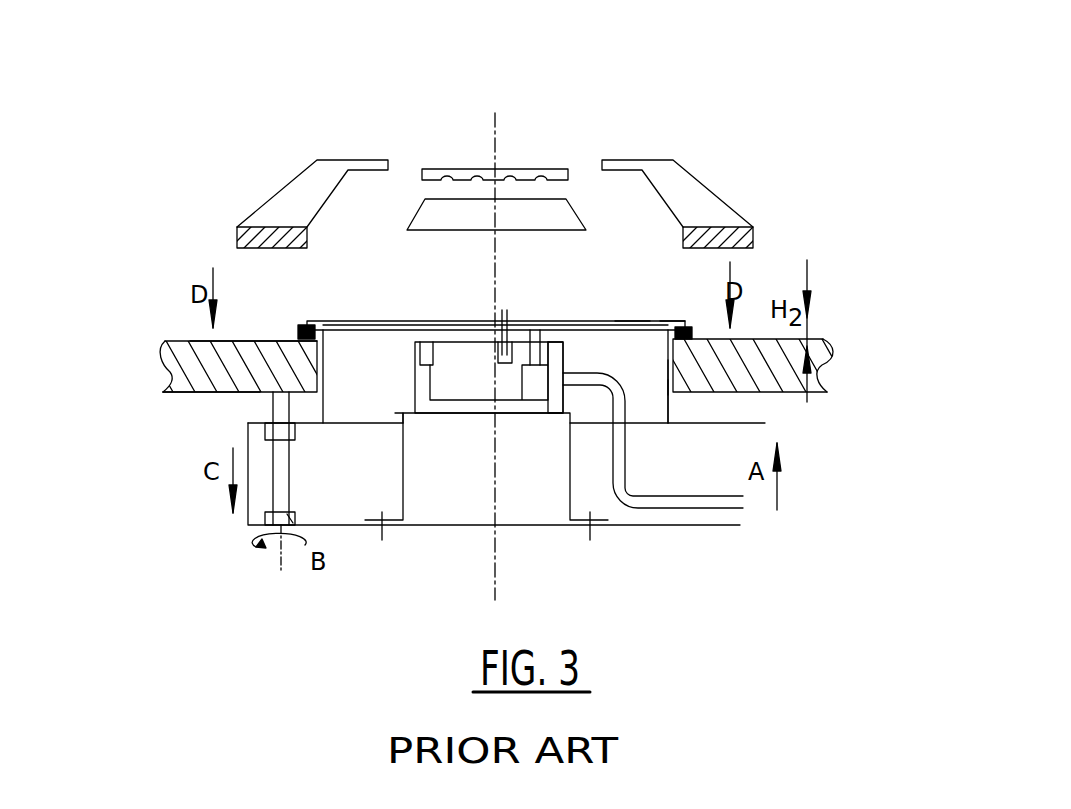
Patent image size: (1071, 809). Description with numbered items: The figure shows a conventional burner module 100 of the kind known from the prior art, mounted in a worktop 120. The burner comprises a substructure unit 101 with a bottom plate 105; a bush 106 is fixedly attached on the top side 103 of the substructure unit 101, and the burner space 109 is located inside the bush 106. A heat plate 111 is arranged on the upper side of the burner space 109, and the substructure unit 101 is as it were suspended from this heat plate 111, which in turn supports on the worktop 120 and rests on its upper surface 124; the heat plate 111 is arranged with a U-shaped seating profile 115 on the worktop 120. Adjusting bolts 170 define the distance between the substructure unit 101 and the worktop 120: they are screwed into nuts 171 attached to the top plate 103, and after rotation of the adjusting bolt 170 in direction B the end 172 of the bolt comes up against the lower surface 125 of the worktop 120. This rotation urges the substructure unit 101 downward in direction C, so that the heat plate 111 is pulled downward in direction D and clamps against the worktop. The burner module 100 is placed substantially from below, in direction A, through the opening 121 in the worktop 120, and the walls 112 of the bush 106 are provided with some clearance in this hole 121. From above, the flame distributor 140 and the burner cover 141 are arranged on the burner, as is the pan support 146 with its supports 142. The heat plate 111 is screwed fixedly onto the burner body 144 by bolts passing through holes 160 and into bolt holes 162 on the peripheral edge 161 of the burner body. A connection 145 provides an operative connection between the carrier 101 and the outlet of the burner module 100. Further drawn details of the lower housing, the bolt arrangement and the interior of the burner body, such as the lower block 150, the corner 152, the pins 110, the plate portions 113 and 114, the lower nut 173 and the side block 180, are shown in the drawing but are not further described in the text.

The burner module 100 is at (683, 110).
The substructure unit 101 is at (150, 497).
The top side 103 is at (740, 413).
The bottom plate 105 is at (520, 525).
The bush 106 is at (670, 413).
The burner space 109 is at (590, 322).
The pins 110 is at (517, 322).
The heat plate 111 is at (307, 325).
The walls 112 is at (667, 378).
The membrane edge 113 is at (633, 322).
The right seal 114 is at (688, 326).
The U-shaped seating profile 115 is at (673, 326).
The worktop 120 is at (166, 341).
The opening 121 is at (667, 385).
The upper surface 124 is at (194, 341).
The lower surface 125 is at (172, 393).
The flame distributor 140 is at (567, 206).
The burner cover 141 is at (532, 172).
The supports 142 is at (303, 180).
The burner body 144 is at (457, 353).
The connection 145 is at (662, 497).
The pan support 146 is at (242, 236).
The lower base block 150 is at (405, 489).
The base corner 152 is at (403, 414).
The holes 160 is at (543, 320).
The peripheral edge 161 is at (420, 388).
The bolt holes 162 is at (497, 320).
The adjusting bolts 170 is at (266, 469).
The nuts 171 is at (295, 441).
The end 172 is at (267, 397).
The lower nut 173 is at (297, 512).
The side block 180 is at (535, 331).